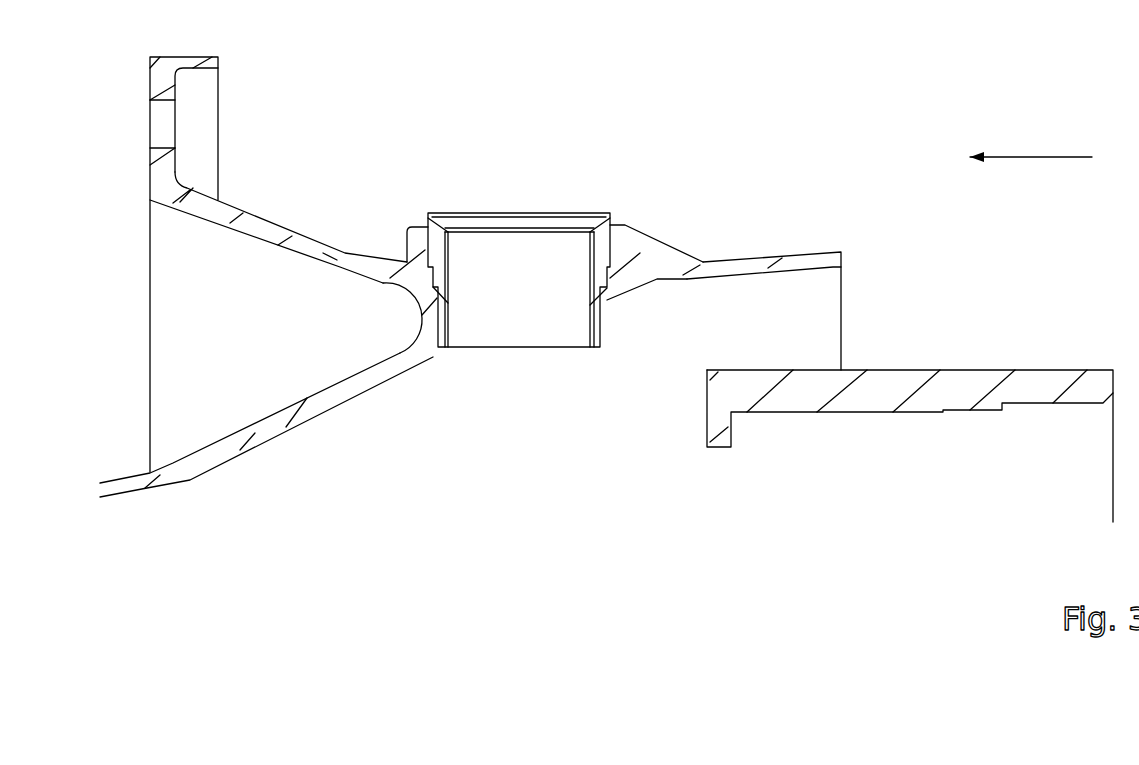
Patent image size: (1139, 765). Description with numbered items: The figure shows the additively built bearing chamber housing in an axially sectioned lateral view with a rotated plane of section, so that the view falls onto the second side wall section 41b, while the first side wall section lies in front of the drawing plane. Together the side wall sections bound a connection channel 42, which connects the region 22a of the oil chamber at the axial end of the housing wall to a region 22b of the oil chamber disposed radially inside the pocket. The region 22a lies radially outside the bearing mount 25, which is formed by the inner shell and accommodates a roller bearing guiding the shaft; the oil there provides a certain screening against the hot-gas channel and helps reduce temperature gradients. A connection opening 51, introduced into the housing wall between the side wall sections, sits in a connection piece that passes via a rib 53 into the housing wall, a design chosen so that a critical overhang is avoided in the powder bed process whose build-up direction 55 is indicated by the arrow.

The bearing mount 25 is at (421, 232).
The connection opening 51 is at (538, 195).
The rib 53 is at (638, 267).
The second side wall section 41b is at (683, 297).
The build-up direction 55 is at (1025, 157).
The connection channel 42 is at (693, 343).
The region of the oil chamber 22b is at (671, 455).
The region of the oil chamber 22a is at (791, 310).